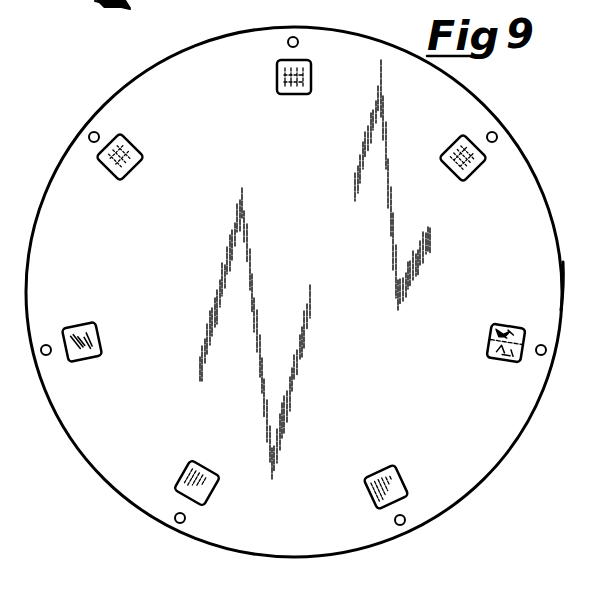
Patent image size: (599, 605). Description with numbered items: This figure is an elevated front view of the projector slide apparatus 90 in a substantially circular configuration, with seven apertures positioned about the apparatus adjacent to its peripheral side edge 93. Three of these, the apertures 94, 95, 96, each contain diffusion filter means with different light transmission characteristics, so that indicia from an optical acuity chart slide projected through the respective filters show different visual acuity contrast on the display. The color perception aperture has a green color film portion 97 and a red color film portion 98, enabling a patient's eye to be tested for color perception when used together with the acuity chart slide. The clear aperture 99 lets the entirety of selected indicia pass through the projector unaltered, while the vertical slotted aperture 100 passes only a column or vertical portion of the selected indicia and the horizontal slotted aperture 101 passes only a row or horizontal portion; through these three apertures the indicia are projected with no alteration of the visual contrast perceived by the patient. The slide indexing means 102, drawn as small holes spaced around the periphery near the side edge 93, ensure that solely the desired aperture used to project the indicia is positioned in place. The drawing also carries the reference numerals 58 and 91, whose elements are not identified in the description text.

The adjacent figure element 58 is at (164, 3).
The projector slide apparatus 90 is at (553, 181).
The disk surface with recorded traces 91 is at (341, 252).
The peripheral side edge 93 is at (565, 285).
The aperture 94 is at (101, 336).
The aperture 95 is at (208, 470).
The aperture 96 is at (383, 470).
The green color film portion 97 is at (497, 358).
The red color film portion 98 is at (497, 327).
The clear aperture 99 is at (452, 167).
The vertical slotted aperture 100 is at (294, 94).
The horizontal slotted aperture 101 is at (138, 160).
The slide indexing means 102 is at (293, 37).